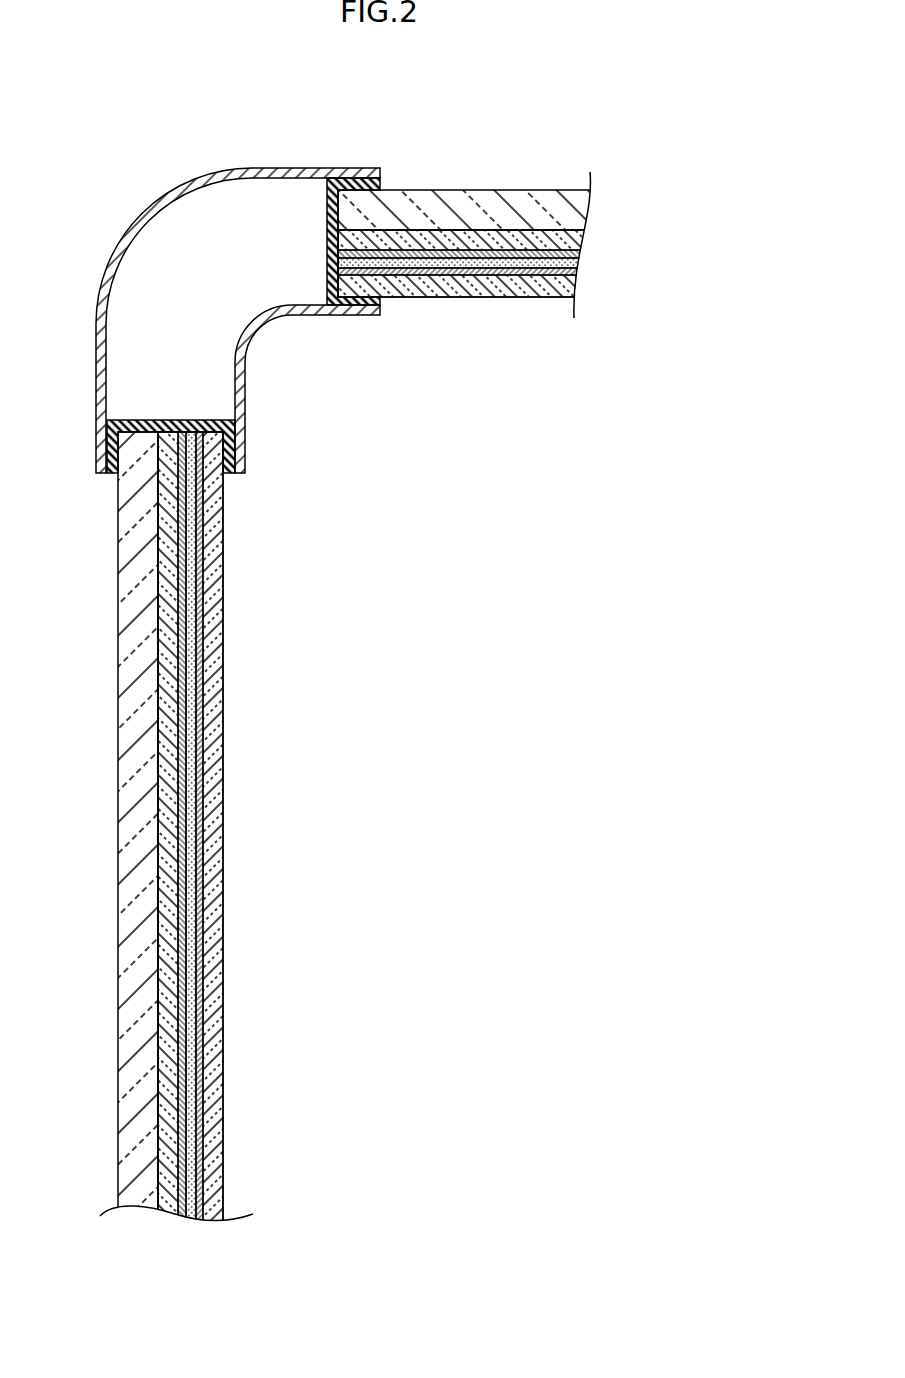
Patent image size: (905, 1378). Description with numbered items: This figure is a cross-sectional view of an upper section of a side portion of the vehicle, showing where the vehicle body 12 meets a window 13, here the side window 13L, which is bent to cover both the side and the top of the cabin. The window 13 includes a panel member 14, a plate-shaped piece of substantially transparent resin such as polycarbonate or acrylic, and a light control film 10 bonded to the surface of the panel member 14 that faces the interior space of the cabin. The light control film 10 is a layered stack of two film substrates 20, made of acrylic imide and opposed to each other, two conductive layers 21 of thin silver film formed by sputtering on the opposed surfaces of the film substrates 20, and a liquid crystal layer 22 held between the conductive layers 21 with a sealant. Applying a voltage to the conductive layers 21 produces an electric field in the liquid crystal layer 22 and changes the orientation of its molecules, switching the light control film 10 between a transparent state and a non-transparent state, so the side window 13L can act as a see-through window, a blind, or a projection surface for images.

The light control film 10 is at (385, 350).
The vehicle body 12 is at (129, 229).
The window 13 is at (515, 405).
The side window 13L is at (335, 590).
The panel member 14 is at (359, 222).
The film substrate 20 is at (412, 290).
The conductive layer 21 is at (448, 273).
The liquid crystal layer 22 is at (475, 265).